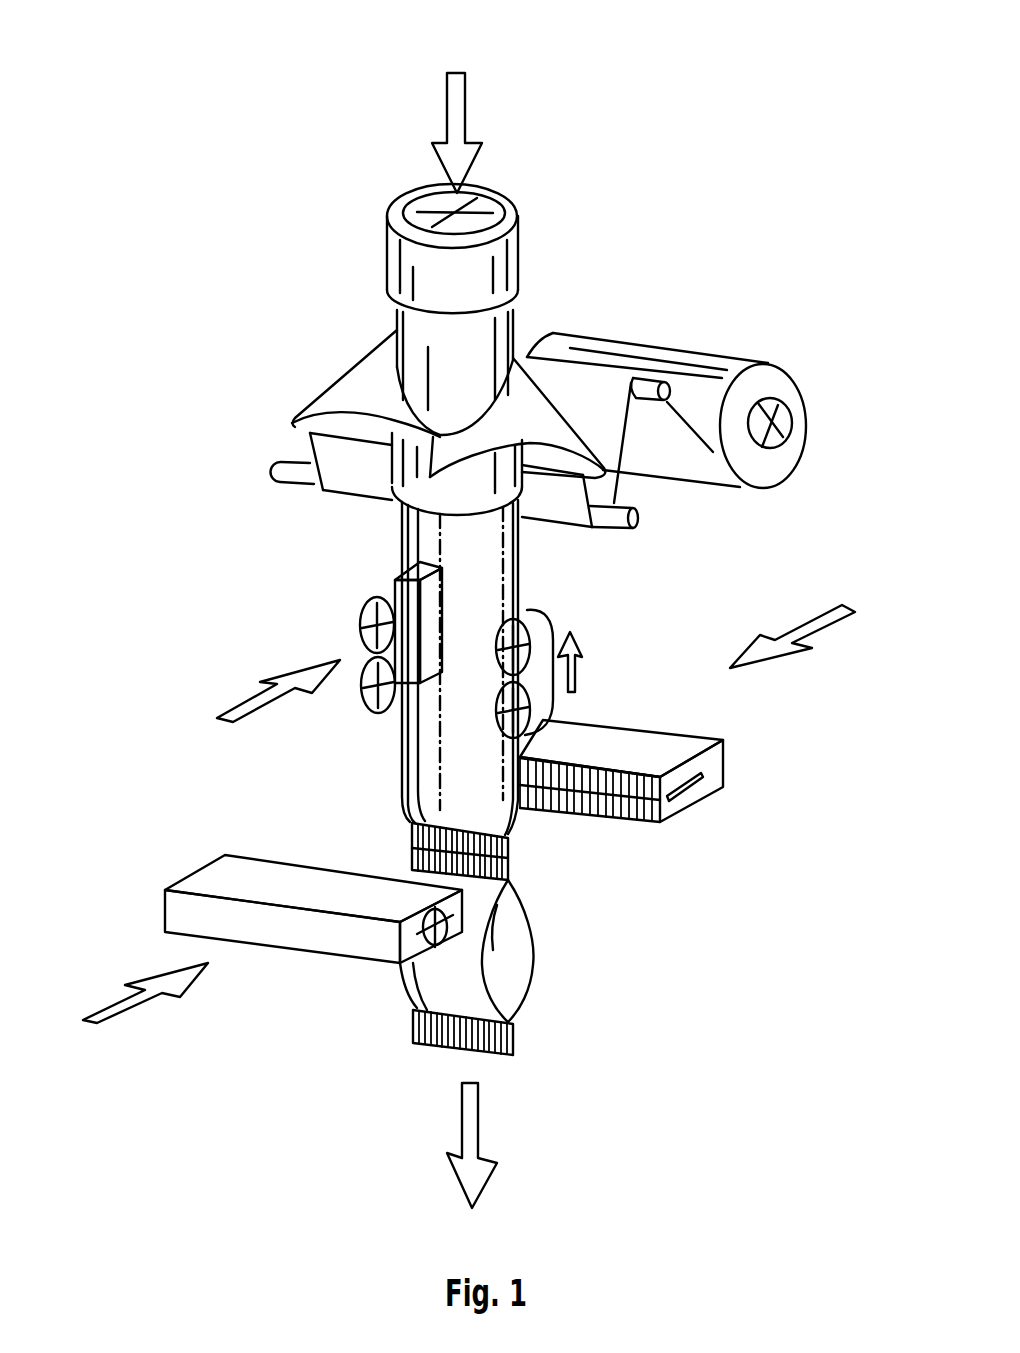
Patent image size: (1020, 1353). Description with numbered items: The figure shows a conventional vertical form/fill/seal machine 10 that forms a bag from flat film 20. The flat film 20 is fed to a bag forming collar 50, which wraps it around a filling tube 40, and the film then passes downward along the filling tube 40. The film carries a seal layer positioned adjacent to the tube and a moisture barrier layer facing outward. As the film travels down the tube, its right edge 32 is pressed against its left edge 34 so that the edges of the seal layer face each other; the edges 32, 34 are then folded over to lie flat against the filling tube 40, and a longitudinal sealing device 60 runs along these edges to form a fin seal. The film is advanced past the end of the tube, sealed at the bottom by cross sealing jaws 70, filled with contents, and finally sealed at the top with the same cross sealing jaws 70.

The vertical form/fill/seal machine 10 is at (193, 115).
The flat film 20 is at (683, 367).
The right edge of the film 32 is at (325, 453).
The left edge of the film 34 is at (613, 523).
The filling tube 40 is at (515, 212).
The bag forming collar 50 is at (358, 378).
The longitudinal sealing device 60 is at (395, 580).
The cross sealing jaws 70 is at (647, 823).